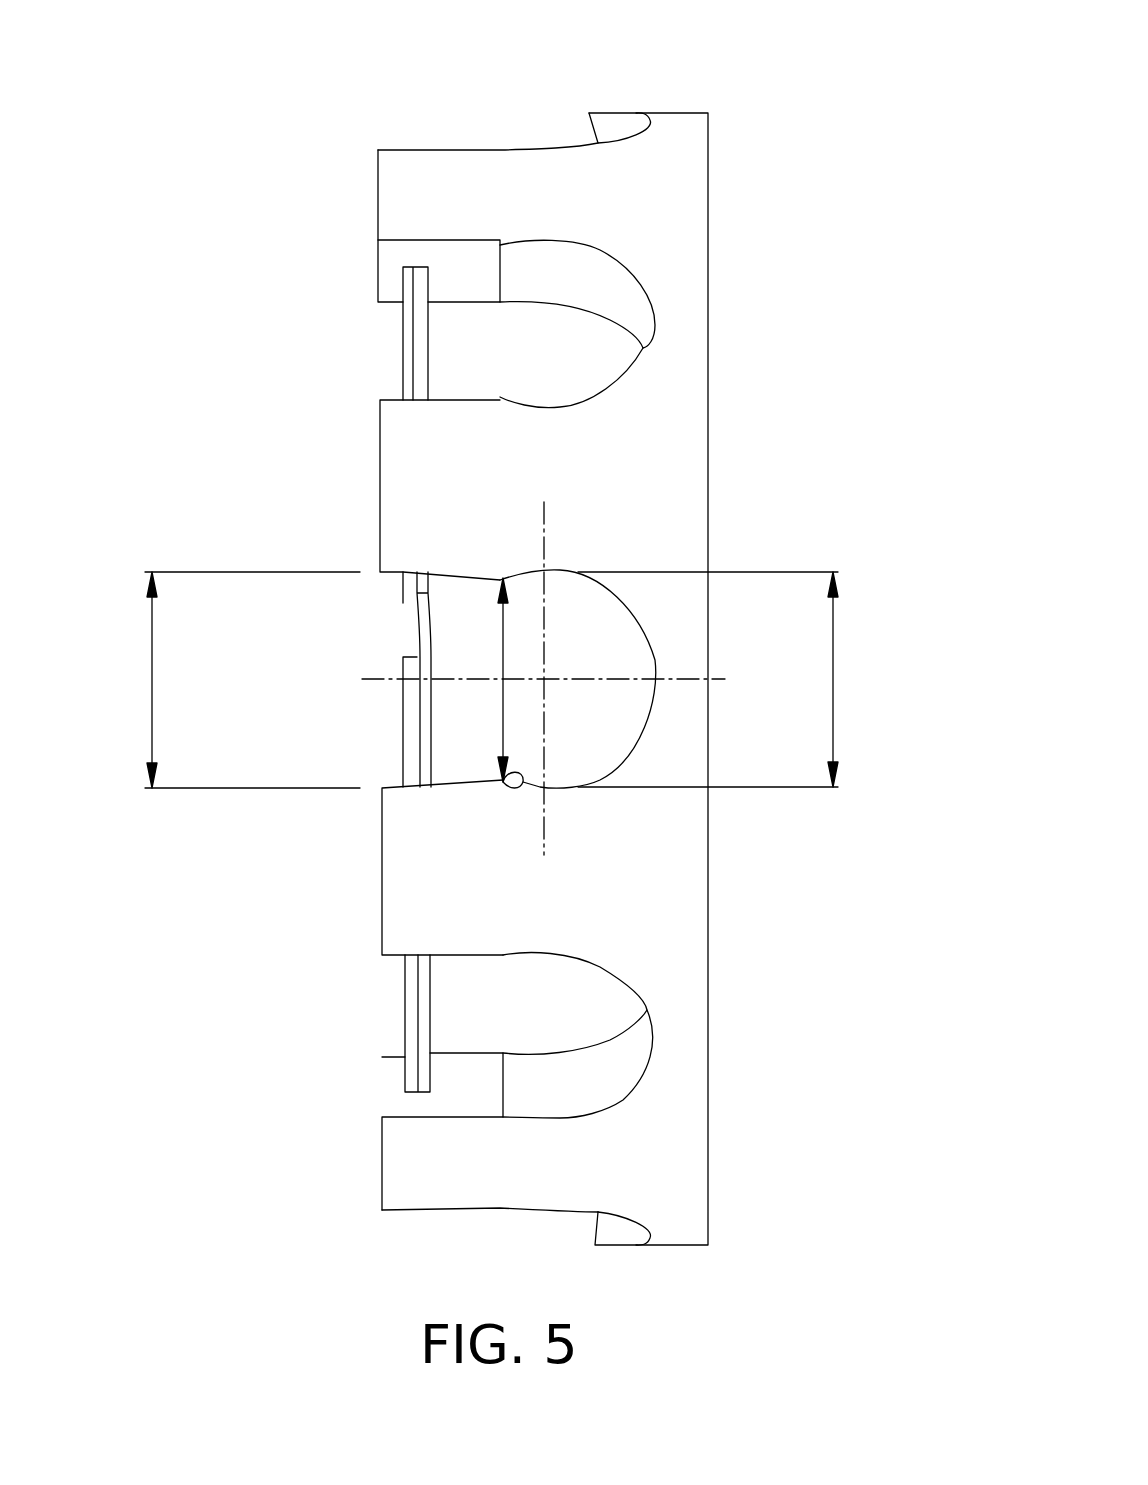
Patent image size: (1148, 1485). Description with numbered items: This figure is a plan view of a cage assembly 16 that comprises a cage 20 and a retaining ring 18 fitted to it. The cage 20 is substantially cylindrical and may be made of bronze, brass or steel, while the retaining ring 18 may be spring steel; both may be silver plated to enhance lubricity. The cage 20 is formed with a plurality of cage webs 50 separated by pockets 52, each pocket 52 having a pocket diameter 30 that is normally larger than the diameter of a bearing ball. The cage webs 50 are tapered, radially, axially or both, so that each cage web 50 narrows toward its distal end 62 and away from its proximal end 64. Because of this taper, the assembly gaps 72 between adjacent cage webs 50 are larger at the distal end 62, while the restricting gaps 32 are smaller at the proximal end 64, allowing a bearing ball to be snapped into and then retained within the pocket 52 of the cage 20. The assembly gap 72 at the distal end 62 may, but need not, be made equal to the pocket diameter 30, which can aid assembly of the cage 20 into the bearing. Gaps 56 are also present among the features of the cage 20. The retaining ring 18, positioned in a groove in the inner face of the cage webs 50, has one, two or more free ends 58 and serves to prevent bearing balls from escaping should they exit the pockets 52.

The cage assembly 16 is at (787, 72).
The retaining ring 18 is at (410, 340).
The cage 20 is at (620, 888).
The pocket diameter 30 is at (835, 662).
The restricting gap 32 is at (503, 655).
The cage web 50 is at (405, 193).
The pocket 52 is at (612, 290).
The gap 56 is at (477, 578).
The free end 58 is at (407, 653).
The distal end 62 is at (378, 403).
The proximal end 64 is at (500, 396).
The assembly gap 72 is at (150, 672).